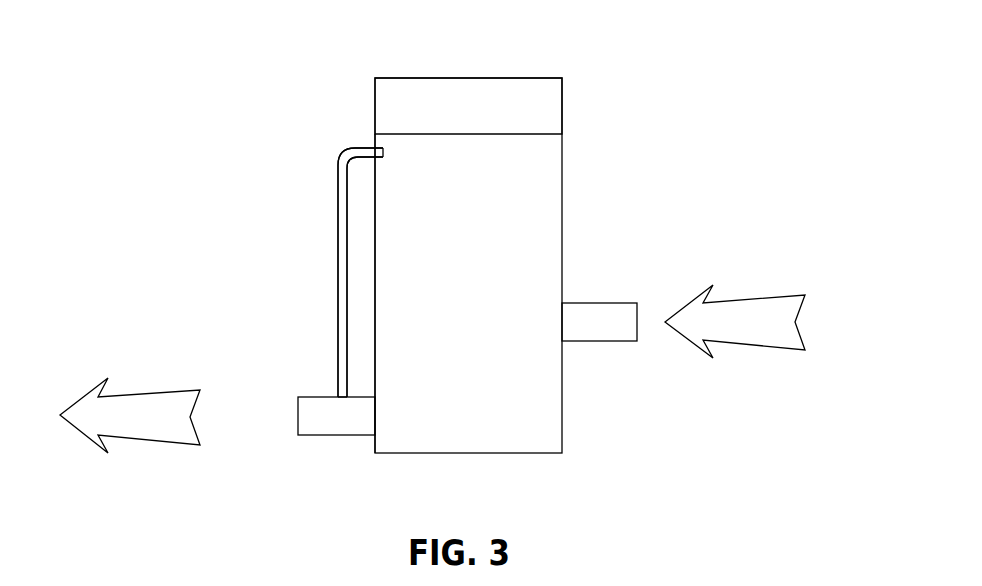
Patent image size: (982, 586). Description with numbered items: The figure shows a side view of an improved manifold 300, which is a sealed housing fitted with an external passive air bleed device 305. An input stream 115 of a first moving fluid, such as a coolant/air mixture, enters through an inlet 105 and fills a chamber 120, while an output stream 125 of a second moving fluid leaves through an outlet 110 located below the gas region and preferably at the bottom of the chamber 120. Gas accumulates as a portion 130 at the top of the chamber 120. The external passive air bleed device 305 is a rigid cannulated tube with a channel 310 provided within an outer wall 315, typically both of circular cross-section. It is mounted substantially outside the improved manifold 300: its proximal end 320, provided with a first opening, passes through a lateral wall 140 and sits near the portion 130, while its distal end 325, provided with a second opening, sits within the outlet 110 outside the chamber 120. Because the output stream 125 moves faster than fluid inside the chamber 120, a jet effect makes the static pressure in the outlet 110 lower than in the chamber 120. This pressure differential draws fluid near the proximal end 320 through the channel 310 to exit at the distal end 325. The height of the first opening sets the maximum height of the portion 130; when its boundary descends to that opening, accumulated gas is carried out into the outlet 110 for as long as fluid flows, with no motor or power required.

The improved manifold 300 is at (148, 55).
The inlet 105 is at (614, 334).
The outlet 110 is at (313, 429).
The input stream 115 is at (753, 336).
The chamber 120 is at (484, 289).
The output stream 125 is at (147, 429).
The portion 130 is at (484, 117).
The lateral wall 140 is at (377, 368).
The external passive air bleed device 305 is at (333, 180).
The channel 310 is at (346, 262).
The outer wall 315 is at (337, 358).
The proximal end 320 is at (393, 155).
The distal end 325 is at (343, 402).